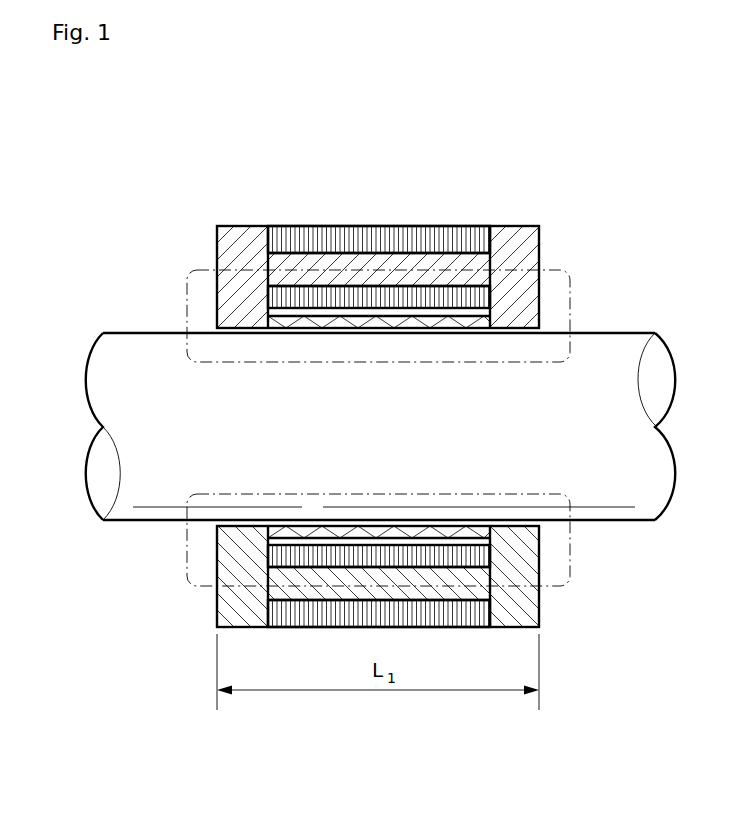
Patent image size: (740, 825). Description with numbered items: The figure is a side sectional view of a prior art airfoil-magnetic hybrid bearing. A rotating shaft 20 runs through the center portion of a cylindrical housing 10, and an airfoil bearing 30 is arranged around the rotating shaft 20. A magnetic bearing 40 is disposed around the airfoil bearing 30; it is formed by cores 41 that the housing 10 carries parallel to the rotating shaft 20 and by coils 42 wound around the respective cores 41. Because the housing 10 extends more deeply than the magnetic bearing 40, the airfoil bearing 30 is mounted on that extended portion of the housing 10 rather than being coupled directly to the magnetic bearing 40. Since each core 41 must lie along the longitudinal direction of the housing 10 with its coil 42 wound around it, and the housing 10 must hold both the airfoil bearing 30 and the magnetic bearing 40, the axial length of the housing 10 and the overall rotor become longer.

The cylindrical housing 10 is at (523, 267).
The rotating shaft 20 is at (141, 343).
The airfoil bearing 30 is at (288, 322).
The magnetic bearing 40 is at (370, 366).
The core 41 is at (363, 258).
The coil 42 is at (352, 135).